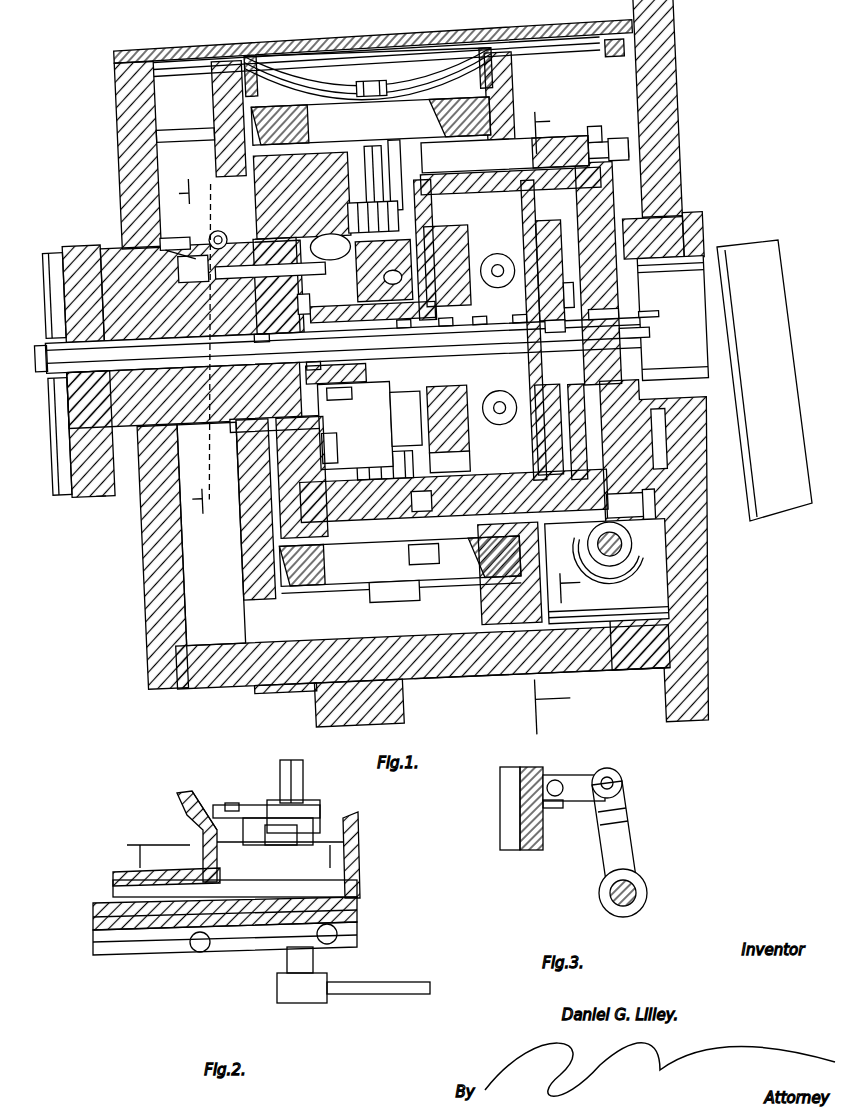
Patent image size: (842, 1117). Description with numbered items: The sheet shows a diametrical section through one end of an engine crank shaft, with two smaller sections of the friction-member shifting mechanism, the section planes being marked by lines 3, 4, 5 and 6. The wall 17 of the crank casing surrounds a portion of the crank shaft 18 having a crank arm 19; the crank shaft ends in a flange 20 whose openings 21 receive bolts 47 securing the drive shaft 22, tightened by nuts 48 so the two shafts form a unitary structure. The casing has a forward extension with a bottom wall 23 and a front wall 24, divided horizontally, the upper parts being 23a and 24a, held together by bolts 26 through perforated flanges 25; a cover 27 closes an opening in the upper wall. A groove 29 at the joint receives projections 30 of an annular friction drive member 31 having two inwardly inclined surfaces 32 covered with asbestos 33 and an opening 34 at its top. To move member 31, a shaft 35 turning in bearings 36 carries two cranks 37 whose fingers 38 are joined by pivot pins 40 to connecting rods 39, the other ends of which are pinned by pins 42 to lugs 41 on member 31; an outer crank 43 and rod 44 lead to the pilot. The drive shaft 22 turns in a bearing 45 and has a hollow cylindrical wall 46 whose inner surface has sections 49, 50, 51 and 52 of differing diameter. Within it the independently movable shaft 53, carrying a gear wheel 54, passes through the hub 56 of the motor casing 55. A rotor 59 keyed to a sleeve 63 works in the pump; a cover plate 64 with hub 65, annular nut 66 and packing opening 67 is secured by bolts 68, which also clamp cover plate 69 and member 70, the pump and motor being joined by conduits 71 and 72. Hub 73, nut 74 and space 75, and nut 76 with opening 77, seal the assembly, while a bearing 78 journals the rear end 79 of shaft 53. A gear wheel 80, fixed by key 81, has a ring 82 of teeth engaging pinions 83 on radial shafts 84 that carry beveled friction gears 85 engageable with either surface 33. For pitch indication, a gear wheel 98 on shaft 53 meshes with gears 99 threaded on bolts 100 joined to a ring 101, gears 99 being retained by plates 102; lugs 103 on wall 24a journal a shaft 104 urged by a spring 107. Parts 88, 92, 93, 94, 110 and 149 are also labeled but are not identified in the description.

In FIG. 2, the section line 3— 3 is at (233, 857).
In FIG. 1, the section line 4— 4 is at (552, 706).
In FIG. 1, the section line 5— 5 is at (198, 345).
In FIG. 1, the section line 6— 6 is at (558, 356).
In FIG. 1, the wall of the crank casing 17 is at (688, 112).
In FIG. 1, the crank shaft 18 is at (672, 318).
In FIG. 1, the crank arm 19 is at (764, 380).
In FIG. 1, the flange 20 is at (650, 198).
In FIG. 1, the openings 21 is at (603, 129).
In FIG. 1, the drive shaft 22 is at (104, 470).
In FIG. 1, the bottom wall 23 is at (470, 679).
In FIG. 2, the upper housing part 23a is at (110, 945).
In FIG. 1, the front wall 24 is at (134, 585).
In FIG. 1, the upper front wall part 24a is at (127, 150).
In FIG. 2, the flanges 25 is at (165, 950).
In FIG. 2, the bolts 26 is at (202, 952).
In FIG. 1, the cover 27 is at (200, 39).
In FIG. 2, the groove 29 is at (335, 886).
In FIG. 2, the projections 30 is at (155, 920).
In FIG. 1, the annular friction drive member 31 is at (260, 624).
In FIG. 2, the annular friction drive member 31 is at (120, 875).
In FIG. 3, the annular friction drive member 31 is at (530, 850).
In FIG. 1, the annular inwardly inclined surfaces 32 is at (512, 110).
In FIG. 2, the annular inwardly inclined surfaces 32 is at (200, 795).
In FIG. 1, the asbestos 33 is at (280, 135).
In FIG. 2, the asbestos 33 is at (185, 812).
In FIG. 3, the asbestos 33 is at (508, 850).
In FIG. 1, the opening 34 is at (298, 75).
In FIG. 1, the shaft 35 is at (600, 566).
In FIG. 2, the shaft 35 is at (303, 782).
In FIG. 3, the shaft 35 is at (648, 890).
In FIG. 1, the bearings 36 is at (618, 575).
In FIG. 2, the cranks 37 is at (320, 810).
In FIG. 3, the cranks 37 is at (630, 835).
In FIG. 2, the fingers 38 is at (278, 845).
In FIG. 3, the fingers 38 is at (614, 784).
In FIG. 2, the connecting rod 39 is at (247, 812).
In FIG. 3, the connecting rod 39 is at (585, 778).
In FIG. 3, the pivot pins 40 is at (617, 775).
In FIG. 2, the ears or lugs 41 is at (240, 845).
In FIG. 3, the ears or lugs 41 is at (555, 780).
In FIG. 3, the pins 42 is at (558, 808).
In FIG. 2, the crank 43 is at (315, 1003).
In FIG. 2, the rod 44 is at (415, 994).
In FIG. 1, the bearing 45 is at (86, 232).
In FIG. 1, the cylindrical wall 46 is at (320, 165).
In FIG. 1, the bolts 47 is at (650, 164).
In FIG. 1, the nuts 48 is at (660, 140).
In FIG. 1, the cylindrical section 49 is at (605, 571).
In FIG. 1, the short cylindrical section 50 is at (483, 574).
In FIG. 1, the short cylindrical section 51 is at (424, 509).
In FIG. 1, the cylindrical section 52 is at (254, 509).
In FIG. 1, the independently movable shaft 53 is at (345, 345).
In FIG. 1, the gear wheel 54 is at (34, 374).
In FIG. 1, the motor casing 55 is at (505, 154).
In FIG. 1, the elongated hub 56 is at (343, 401).
In FIG. 1, the rotor 59 is at (496, 417).
In FIG. 1, the cylindrical sleeve 63 is at (355, 425).
In FIG. 1, the cover plate 64 is at (447, 332).
In FIG. 1, the hub 65 is at (344, 439).
In FIG. 1, the annular nut 66 is at (405, 333).
In FIG. 1, the opening 67 is at (404, 418).
In FIG. 1, the bolts 68 is at (412, 138).
In FIG. 1, the cover plate 69 is at (566, 290).
In FIG. 1, the member 70 is at (566, 260).
In FIG. 1, the conduit 71 is at (510, 170).
In FIG. 1, the conduit 72 is at (454, 498).
In FIG. 1, the hub 73 is at (556, 290).
In FIG. 1, the annular nut 74 is at (520, 327).
In FIG. 1, the space 75 is at (603, 305).
In FIG. 1, the annular nut 76 is at (313, 354).
In FIG. 1, the annular opening 77 is at (335, 358).
In FIG. 1, the central bearing 78 is at (652, 302).
In FIG. 1, the rear end of shaft 79 is at (650, 343).
In FIG. 1, the gear wheel 80 is at (449, 446).
In FIG. 1, the key 81 is at (371, 265).
In FIG. 1, the ring of gear teeth 82 is at (424, 554).
In FIG. 1, the pinions 83 is at (361, 341).
In FIG. 1, the radial shafts 84 is at (380, 165).
In FIG. 1, the friction gears 85 is at (386, 344).
In FIG. 1, the gear bracket 88 is at (447, 266).
In FIG. 1, the collar 92 is at (480, 329).
In FIG. 1, the gear plate 93 is at (550, 347).
In FIG. 1, the pinion 94 is at (474, 337).
In FIG. 1, the gear wheel 98 is at (264, 343).
In FIG. 1, the gears 99 is at (240, 467).
In FIG. 1, the bolts 100 is at (208, 492).
In FIG. 1, the ring 101 is at (215, 440).
In FIG. 1, the plates 102 is at (369, 344).
In FIG. 1, the lugs 103 is at (170, 230).
In FIG. 1, the shaft 104 is at (216, 226).
In FIG. 1, the spring 107 is at (170, 240).
In FIG. 1, the lug 110 is at (95, 484).
In FIG. 1, the end plate 149 is at (47, 370).